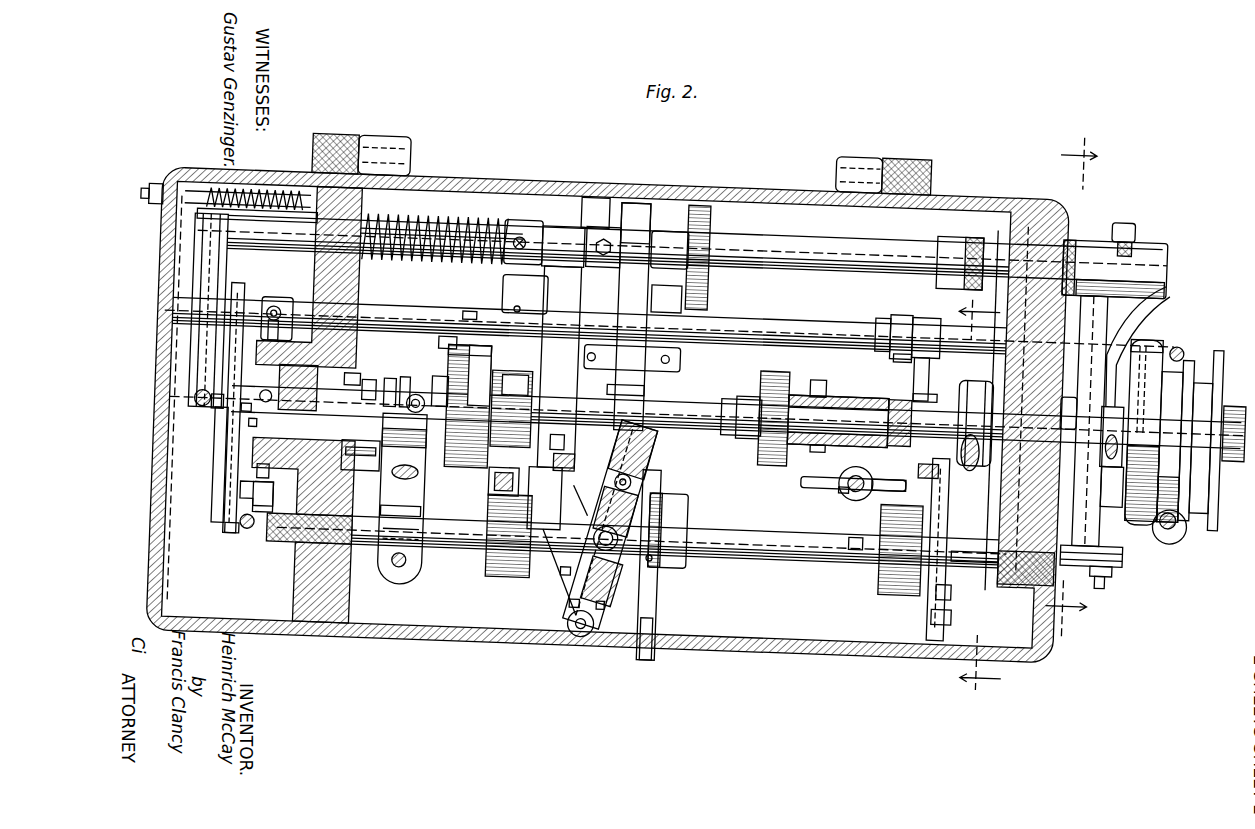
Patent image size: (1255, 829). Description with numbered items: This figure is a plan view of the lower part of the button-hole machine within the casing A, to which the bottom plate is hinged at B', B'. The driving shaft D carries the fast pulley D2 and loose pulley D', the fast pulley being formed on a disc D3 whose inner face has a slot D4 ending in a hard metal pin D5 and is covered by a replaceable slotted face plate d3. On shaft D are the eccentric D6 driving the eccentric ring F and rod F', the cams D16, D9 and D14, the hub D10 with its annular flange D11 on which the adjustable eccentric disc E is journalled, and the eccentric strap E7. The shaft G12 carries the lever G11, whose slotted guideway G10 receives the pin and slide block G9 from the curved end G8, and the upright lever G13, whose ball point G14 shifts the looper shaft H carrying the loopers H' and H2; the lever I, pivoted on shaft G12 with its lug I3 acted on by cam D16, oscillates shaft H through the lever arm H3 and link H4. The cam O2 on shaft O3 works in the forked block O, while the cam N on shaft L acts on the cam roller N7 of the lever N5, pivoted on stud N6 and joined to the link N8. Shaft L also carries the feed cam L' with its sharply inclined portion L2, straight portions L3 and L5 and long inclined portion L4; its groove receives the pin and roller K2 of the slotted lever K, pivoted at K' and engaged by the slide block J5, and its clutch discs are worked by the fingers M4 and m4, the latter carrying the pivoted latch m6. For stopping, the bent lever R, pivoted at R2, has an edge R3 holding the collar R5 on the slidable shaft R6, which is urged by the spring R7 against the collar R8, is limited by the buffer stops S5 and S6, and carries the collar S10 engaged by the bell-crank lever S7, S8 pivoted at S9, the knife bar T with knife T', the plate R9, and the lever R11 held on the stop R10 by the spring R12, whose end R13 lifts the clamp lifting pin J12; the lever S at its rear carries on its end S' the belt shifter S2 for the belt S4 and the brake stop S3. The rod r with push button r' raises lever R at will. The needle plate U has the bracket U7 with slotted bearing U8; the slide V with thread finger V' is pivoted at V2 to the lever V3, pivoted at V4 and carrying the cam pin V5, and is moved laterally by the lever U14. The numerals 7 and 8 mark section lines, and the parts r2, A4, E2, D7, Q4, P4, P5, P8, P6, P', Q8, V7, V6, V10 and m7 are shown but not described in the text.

The casing A is at (720, 182).
The mounting lug B' is at (622, 151).
The pin r' is at (135, 194).
The spring r2 is at (258, 186).
The rod R6 is at (752, 216).
The spring r is at (436, 207).
The rod R7 is at (424, 230).
The block R8 is at (527, 207).
The screw R12 is at (518, 236).
The block R9 is at (525, 294).
The bracket S8 is at (560, 212).
The nut block R5 is at (606, 251).
The lever arm R3 is at (627, 200).
The lever R is at (632, 317).
The collar S10 is at (668, 213).
The toothed collar S9 is at (702, 186).
The block S7 is at (686, 282).
The bearing sleeve S6 is at (970, 208).
The bracket S5 is at (1072, 207).
The post S is at (1092, 431).
The nut S' is at (1110, 579).
The cam arm d3 is at (1145, 312).
The clutch drum D4 is at (1148, 342).
The drum rim D5 is at (1170, 307).
The pin S4 is at (1196, 350).
The disc D2 is at (1205, 336).
The disc D' is at (1218, 441).
The bracket S3 is at (1114, 380).
The drum hub D3 is at (1110, 486).
The roller S2 is at (1190, 504).
The bearing boss A4 is at (1064, 413).
The section line 8 is at (1077, 389).
The section line 7 is at (880, 578).
The shaft G12 is at (436, 298).
The collar D11 is at (453, 326).
The collar R10 is at (488, 291).
The lever G13 is at (244, 277).
The pivot screw G14 is at (281, 302).
The bar T is at (208, 310).
The pivot T' is at (166, 380).
The arm I3 is at (220, 400).
The block V is at (298, 387).
The pivot V' is at (283, 413).
The collar U7 is at (358, 366).
The collar U14 is at (376, 372).
The collar D14 is at (398, 370).
The collar V5 is at (413, 368).
The collar D10 is at (448, 366).
The pivot V2 is at (426, 385).
The main shaft D is at (708, 409).
The gear E is at (467, 406).
The gear rim E2 is at (498, 340).
The pinion E7 is at (511, 408).
The foot J12 is at (567, 420).
The lever arm R11 is at (559, 367).
The foot R13 is at (564, 447).
The bracket R2 is at (687, 341).
The lug D9 is at (640, 372).
The lug D7 is at (830, 356).
The collar G11 is at (881, 302).
The collar G9 is at (900, 298).
The hub G8 is at (932, 290).
The collar G10 is at (910, 335).
The lever D6 is at (936, 340).
The bracket F is at (975, 423).
The pivot F' is at (969, 468).
The sleeve O3 is at (838, 425).
The collar O2 is at (899, 423).
The gear Q4 is at (780, 444).
The eccentric O is at (874, 444).
The pin P4 is at (861, 466).
The arm P5 is at (850, 466).
The rod P8 is at (823, 465).
The rod end P6 is at (884, 465).
The block N8 is at (929, 440).
The lever P' is at (840, 569).
The shaft L is at (641, 531).
The bar N is at (913, 549).
The knurled nut N7 is at (965, 527).
The screw N5 is at (966, 565).
The screw N6 is at (967, 589).
The gear M4 is at (503, 494).
The hub Q8 is at (500, 470).
The slot V7 is at (430, 465).
The lever V3 is at (402, 498).
The pivot V4 is at (412, 560).
The lever V6 is at (393, 502).
The bracket V10 is at (396, 440).
The bracket U8 is at (396, 464).
The block U is at (285, 486).
The bracket H is at (222, 506).
The arm H' is at (209, 428).
The arm H2 is at (258, 421).
The lug D16 is at (268, 466).
The bar I is at (224, 498).
The foot H3 is at (241, 531).
The pivot H4 is at (264, 526).
The block L' is at (578, 522).
The rod L4 is at (586, 472).
The link L5 is at (575, 560).
The link L3 is at (585, 590).
The lever K is at (621, 525).
The pivot K' is at (580, 645).
The pin K2 is at (628, 528).
The pin J5 is at (643, 467).
The hub m4 is at (680, 503).
The bar m7 is at (672, 595).
The bar end m6 is at (672, 612).
The rod L2 is at (620, 593).